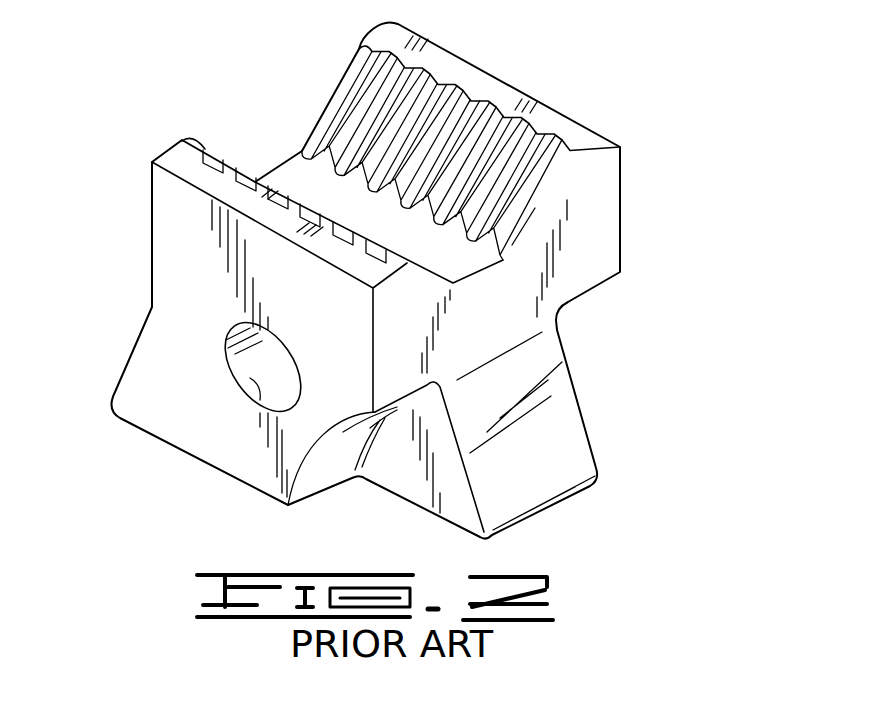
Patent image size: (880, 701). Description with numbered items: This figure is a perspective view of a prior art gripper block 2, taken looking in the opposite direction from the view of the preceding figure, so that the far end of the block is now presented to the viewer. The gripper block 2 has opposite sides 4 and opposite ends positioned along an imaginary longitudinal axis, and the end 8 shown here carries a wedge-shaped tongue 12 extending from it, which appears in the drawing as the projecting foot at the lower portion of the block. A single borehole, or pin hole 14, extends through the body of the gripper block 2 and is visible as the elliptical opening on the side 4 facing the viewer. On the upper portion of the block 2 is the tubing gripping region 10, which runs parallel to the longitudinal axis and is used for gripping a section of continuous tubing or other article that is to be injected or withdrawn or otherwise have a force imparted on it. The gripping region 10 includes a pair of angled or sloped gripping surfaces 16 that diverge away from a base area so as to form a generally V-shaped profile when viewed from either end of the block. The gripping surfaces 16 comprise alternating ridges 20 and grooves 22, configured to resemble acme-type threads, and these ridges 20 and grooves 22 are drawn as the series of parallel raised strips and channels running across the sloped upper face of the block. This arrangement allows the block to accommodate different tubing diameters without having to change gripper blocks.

The gripper block 2 is at (638, 110).
The opposite sides 4 is at (188, 267).
The end 8 is at (510, 326).
The gripping region 10 is at (367, 130).
The wedge-shaped tongue 12 is at (563, 420).
The pin hole 14 is at (262, 398).
The sloped gripping surfaces 16 is at (348, 82).
The ridges 20 is at (470, 100).
The grooves 22 is at (497, 105).